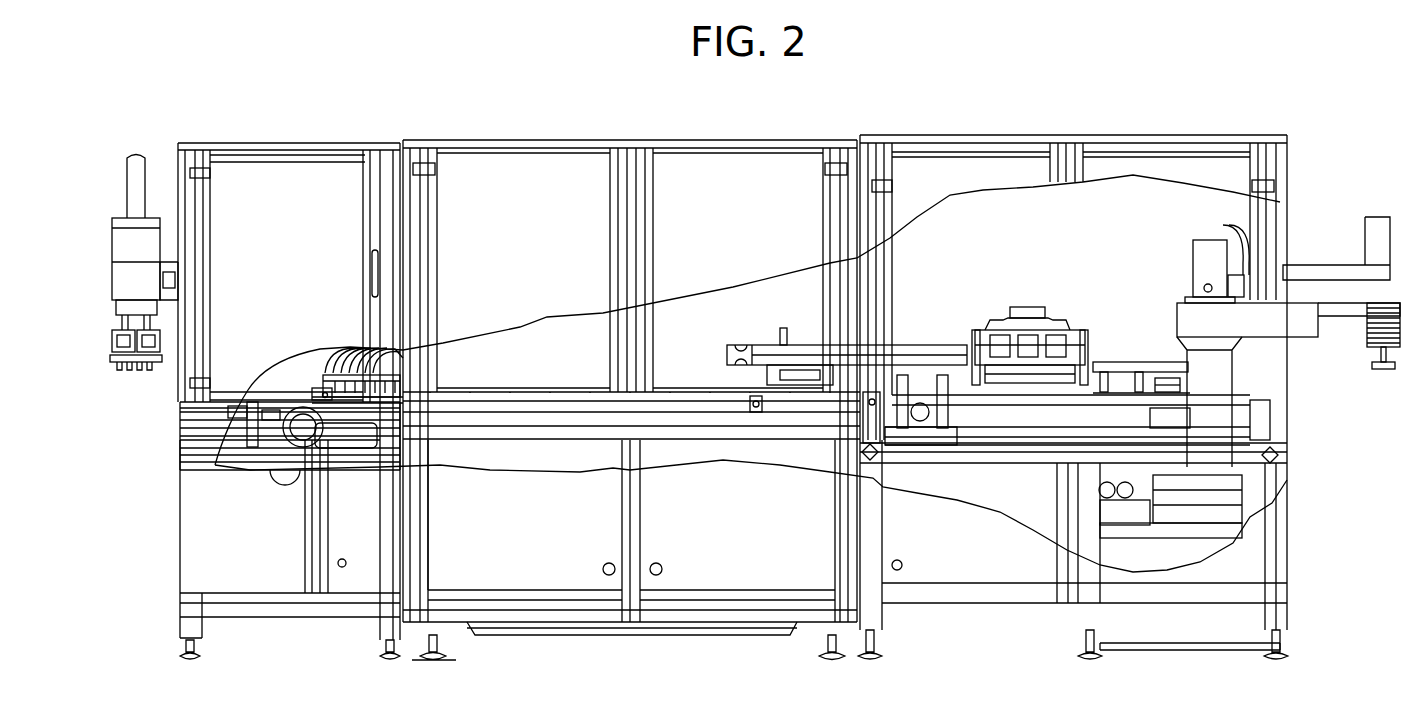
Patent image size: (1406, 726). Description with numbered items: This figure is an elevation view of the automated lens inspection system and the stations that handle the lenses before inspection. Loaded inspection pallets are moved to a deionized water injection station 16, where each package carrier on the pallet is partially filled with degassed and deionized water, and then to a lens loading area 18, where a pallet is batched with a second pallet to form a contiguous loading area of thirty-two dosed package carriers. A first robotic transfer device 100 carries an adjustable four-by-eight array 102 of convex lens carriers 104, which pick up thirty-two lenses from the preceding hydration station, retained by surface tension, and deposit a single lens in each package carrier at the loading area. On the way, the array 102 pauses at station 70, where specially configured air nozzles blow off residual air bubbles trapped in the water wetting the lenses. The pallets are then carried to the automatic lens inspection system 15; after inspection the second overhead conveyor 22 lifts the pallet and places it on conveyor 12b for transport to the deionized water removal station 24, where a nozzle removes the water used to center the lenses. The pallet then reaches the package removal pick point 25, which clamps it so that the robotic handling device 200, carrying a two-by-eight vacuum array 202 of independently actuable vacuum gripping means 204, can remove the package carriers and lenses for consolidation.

The automatic lens inspection system 15 is at (575, 466).
The station 70 is at (223, 393).
The lens loading area 18 is at (215, 465).
The deionized water injection station 16 is at (357, 350).
The second overhead conveyor 22 is at (805, 345).
The deionized water removal station 24 is at (1030, 307).
The conveyor 12b is at (1115, 395).
The package removal pick point 25 is at (1165, 380).
The robotic handling device 200 is at (1185, 315).
The 2×8 vacuum array 202 is at (1380, 363).
The vacuum gripping means 204 is at (1375, 367).
The first robotic transfer device 100 is at (120, 275).
The adjustable 4×8 array 102 is at (110, 358).
The convex lens carriers 104 is at (123, 372).